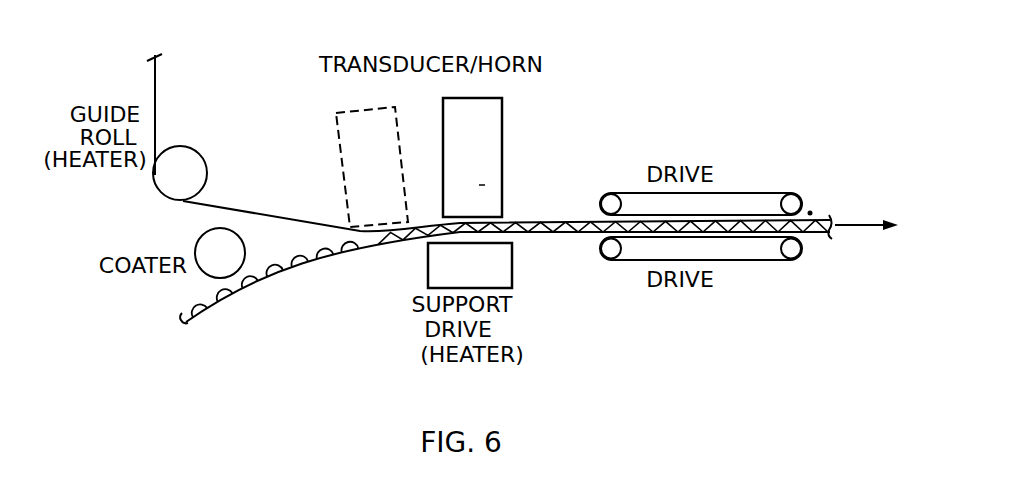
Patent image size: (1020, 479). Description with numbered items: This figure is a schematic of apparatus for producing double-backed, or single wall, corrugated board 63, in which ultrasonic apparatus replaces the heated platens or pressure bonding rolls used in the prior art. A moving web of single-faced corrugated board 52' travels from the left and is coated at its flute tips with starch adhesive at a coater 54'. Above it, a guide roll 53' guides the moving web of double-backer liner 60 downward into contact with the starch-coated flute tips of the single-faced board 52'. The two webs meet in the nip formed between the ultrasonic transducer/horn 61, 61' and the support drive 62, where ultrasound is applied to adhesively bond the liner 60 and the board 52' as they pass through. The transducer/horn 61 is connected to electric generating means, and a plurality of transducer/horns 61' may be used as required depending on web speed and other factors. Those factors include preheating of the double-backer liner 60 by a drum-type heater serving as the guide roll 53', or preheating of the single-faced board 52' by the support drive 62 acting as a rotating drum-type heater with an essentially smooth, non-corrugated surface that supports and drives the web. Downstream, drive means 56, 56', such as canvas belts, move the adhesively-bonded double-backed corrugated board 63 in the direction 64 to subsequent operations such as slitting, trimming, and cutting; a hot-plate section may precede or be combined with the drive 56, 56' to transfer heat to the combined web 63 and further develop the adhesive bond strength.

The moving web of single-faced corrugated board 52' is at (505, 264).
The guide roll 53' is at (202, 163).
The coater 54' is at (194, 253).
The drive means 56 is at (701, 187).
The drive means 56' is at (710, 263).
The double-backer liner 60 is at (155, 101).
The ultrasonic transducer/horn 61 is at (472, 157).
The transducer/horn 61' is at (372, 167).
The support drive 62 is at (484, 272).
The double-backed corrugated board 63 is at (810, 213).
The direction 64 is at (840, 223).